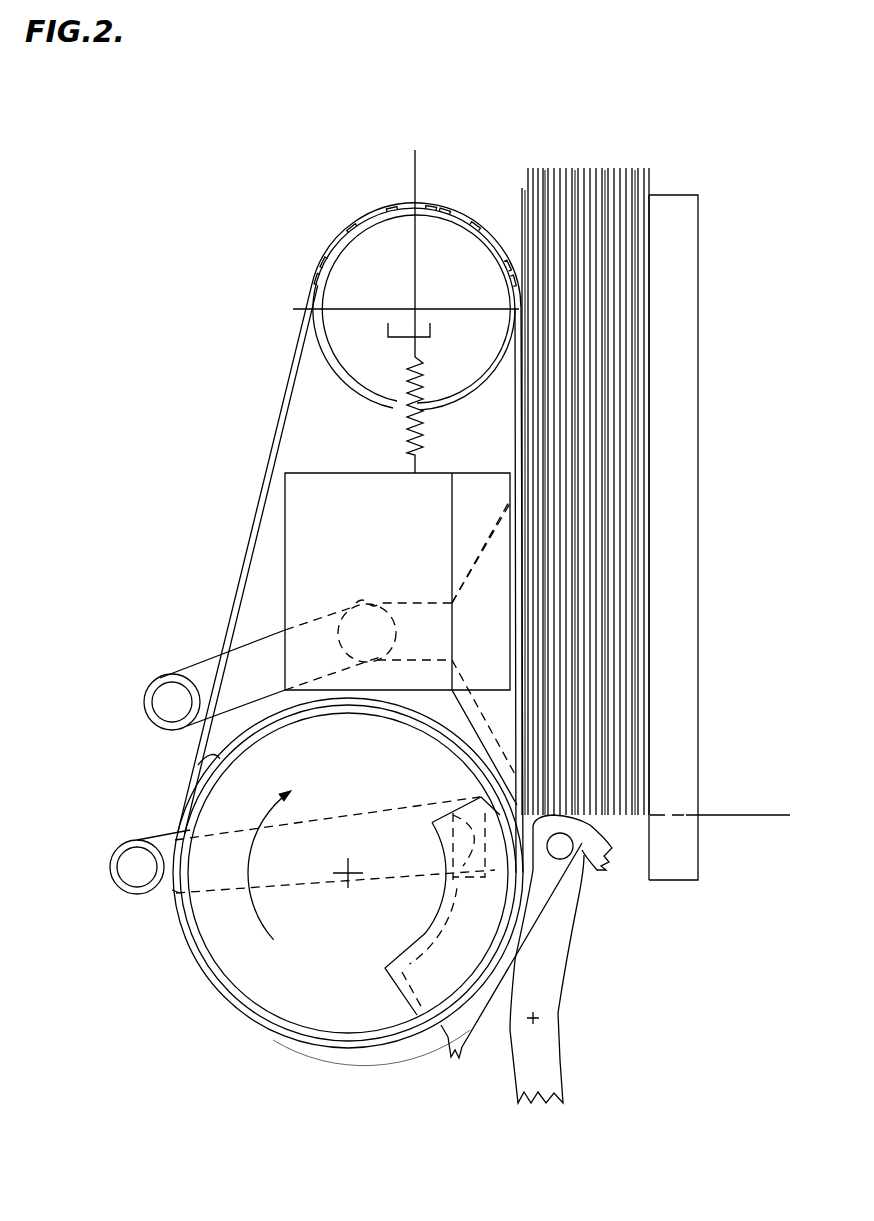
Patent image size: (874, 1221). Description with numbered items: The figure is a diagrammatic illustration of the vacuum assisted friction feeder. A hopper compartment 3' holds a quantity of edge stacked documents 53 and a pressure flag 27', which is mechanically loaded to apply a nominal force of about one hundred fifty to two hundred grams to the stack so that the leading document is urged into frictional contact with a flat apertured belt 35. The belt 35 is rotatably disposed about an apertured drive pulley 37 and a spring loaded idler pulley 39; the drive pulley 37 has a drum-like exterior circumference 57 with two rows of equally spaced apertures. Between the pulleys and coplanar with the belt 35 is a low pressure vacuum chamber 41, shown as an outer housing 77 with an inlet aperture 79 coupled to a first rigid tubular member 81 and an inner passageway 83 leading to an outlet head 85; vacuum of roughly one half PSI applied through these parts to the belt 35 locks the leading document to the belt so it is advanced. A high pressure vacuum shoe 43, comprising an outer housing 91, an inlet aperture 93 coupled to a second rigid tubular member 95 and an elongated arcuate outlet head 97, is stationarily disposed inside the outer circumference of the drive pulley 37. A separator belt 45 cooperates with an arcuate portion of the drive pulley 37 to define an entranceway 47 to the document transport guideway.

The hopper compartment 3' is at (718, 520).
The pressure flag 27' is at (719, 537).
The edge stacked documents 53 is at (574, 162).
The spring loaded idler pulley 39 is at (459, 284).
The flat apertured belt 35 is at (286, 386).
The low pressure vacuum chamber 41 is at (356, 490).
The outer housing 77 is at (434, 473).
The inlet aperture 79 is at (356, 603).
The inner passageway 83 is at (432, 603).
The first rigid tubular member 81 is at (157, 689).
The outlet head 85 is at (500, 672).
The drum-like exterior circumference 57 is at (198, 765).
The second rigid tubular member 95 is at (122, 857).
The inlet aperture 93 is at (463, 820).
The high pressure vacuum shoe 43 is at (422, 933).
The outer housing 91 is at (488, 936).
The apertured drive pulley 37 is at (235, 968).
The separator belt 45 is at (618, 852).
The entranceway 47 is at (438, 1045).
The elongated arcuate outlet head 97 is at (470, 957).